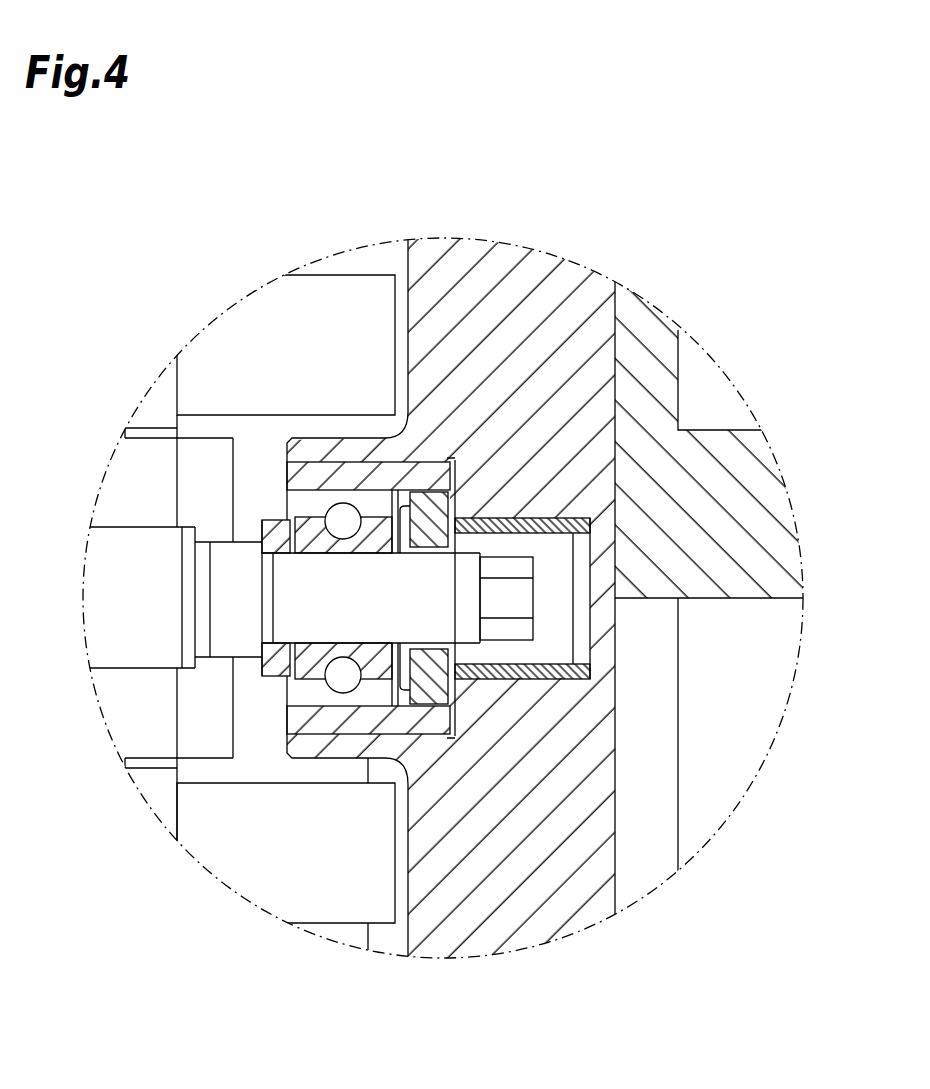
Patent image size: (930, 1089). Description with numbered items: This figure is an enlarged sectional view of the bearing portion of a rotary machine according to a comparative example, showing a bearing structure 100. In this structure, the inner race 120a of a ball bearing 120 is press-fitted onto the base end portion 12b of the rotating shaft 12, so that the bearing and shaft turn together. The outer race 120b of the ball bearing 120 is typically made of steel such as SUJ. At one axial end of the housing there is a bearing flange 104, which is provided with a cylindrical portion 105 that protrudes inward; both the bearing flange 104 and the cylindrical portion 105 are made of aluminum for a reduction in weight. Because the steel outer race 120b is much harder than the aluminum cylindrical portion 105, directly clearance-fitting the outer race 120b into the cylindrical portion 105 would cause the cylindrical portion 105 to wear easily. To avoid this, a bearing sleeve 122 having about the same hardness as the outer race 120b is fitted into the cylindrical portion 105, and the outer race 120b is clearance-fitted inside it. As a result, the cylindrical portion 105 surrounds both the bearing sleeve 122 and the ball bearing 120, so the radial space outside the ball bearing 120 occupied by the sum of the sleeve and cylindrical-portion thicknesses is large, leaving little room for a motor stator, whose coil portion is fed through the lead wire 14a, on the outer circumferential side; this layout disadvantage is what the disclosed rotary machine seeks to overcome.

The rotating shaft 12 is at (120, 638).
The base end portion 12b is at (360, 600).
The lead wire 14a is at (345, 298).
The bearing structure 100 is at (262, 765).
The bearing flange 104 is at (530, 275).
The cylindrical portion 105 is at (360, 452).
The ball bearing 120 is at (285, 498).
The inner race 120a is at (293, 682).
The outer race 120b is at (322, 697).
The bearing sleeve 122 is at (423, 473).